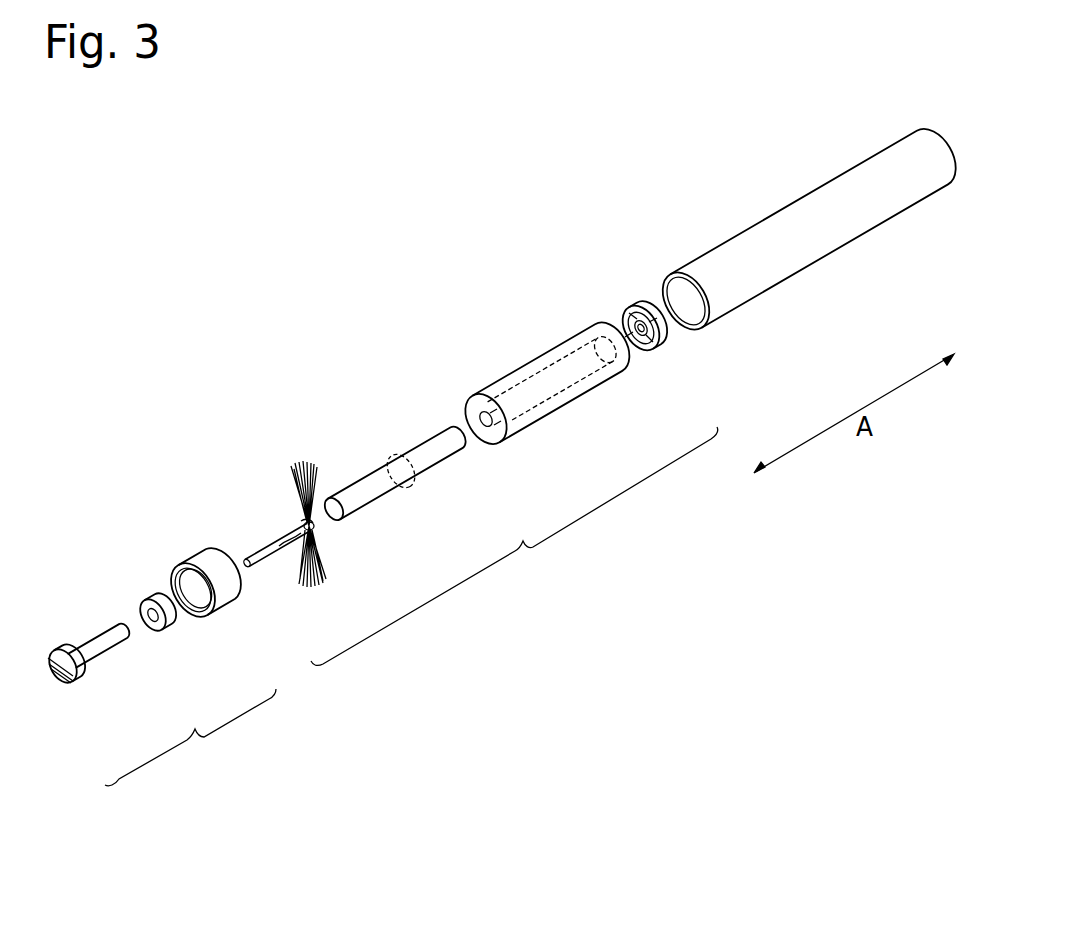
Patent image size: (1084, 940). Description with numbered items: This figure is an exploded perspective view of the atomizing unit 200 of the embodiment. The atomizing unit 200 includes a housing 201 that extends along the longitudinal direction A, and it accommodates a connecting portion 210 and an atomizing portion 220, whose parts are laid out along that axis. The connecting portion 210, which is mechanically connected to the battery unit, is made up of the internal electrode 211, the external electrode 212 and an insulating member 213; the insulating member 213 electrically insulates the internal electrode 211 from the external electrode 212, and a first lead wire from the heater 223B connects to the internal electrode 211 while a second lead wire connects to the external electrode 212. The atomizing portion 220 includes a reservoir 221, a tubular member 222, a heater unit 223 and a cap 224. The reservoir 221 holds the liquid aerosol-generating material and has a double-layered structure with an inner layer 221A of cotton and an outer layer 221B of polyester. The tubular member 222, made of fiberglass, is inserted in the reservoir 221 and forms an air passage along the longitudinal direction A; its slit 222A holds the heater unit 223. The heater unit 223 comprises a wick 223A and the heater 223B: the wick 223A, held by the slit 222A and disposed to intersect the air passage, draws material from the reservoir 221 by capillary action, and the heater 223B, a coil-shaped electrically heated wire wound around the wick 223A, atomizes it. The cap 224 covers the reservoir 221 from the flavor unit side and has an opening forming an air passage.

The atomizing unit 200 is at (507, 219).
The housing 201 is at (777, 265).
The connecting portion 210 is at (190, 737).
The internal electrode 211 is at (100, 648).
The external electrode 212 is at (228, 593).
The insulating member 213 is at (173, 617).
The atomizing portion 220 is at (514, 546).
The reservoir 221 is at (595, 380).
The inner layer 221A is at (558, 370).
The outer layer 221B is at (500, 387).
The tubular member 222 is at (373, 488).
The slit 222A is at (392, 455).
The heater unit 223 is at (263, 558).
The wick 223A is at (292, 482).
The heater 223B is at (280, 514).
The cap 224 is at (670, 342).